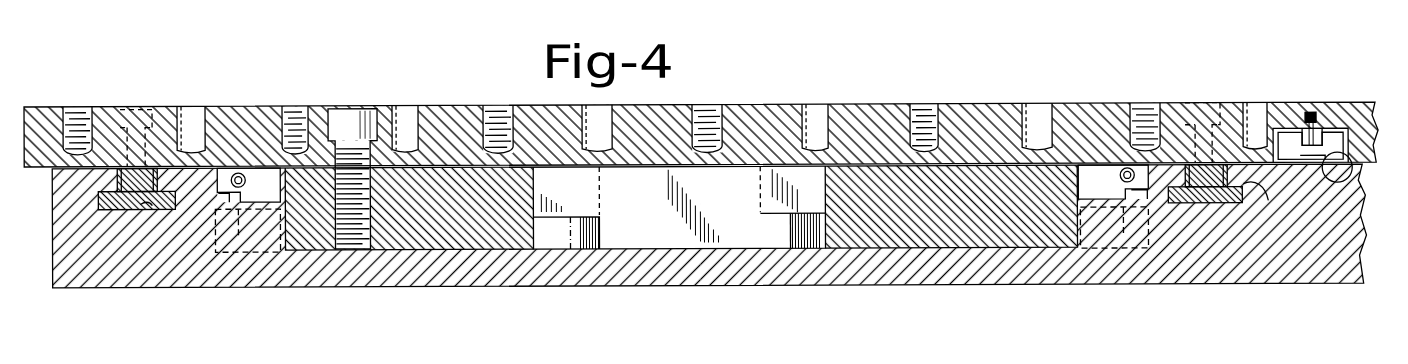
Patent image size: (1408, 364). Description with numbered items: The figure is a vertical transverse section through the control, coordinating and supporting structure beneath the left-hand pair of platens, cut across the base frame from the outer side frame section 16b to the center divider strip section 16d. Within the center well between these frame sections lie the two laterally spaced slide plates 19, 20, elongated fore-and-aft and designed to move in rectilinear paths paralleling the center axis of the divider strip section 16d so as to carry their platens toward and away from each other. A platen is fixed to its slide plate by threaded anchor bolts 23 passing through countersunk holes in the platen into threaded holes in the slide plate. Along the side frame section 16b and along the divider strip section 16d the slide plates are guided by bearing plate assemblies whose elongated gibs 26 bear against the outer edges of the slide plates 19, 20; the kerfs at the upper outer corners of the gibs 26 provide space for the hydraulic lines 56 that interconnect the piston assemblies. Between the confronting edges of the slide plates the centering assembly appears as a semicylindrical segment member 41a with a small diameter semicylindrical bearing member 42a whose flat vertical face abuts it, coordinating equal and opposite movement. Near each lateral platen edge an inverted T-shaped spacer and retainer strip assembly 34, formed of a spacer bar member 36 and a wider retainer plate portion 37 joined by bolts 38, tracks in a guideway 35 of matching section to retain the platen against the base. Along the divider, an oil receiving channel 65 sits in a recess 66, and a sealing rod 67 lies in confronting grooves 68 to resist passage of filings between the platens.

The outer side frame section 16b is at (85, 273).
The center divider strip section 16d is at (1290, 247).
The slide plate 19 is at (955, 241).
The slide plate 20 is at (467, 242).
The threaded anchor bolt 23 is at (357, 112).
The gib 26 is at (268, 178).
The spacer and retainer strip assembly 34 is at (1220, 209).
The guideway 35 is at (147, 207).
The spacer bar member 36 is at (115, 181).
The retainer plate portion 37 is at (105, 205).
The bolt 38 is at (140, 107).
The semicylindrical segment member 41a is at (648, 244).
The semicylindrical bearing member 42a is at (555, 244).
The hydraulic line 56 is at (1115, 172).
The oil receiving and conveying channel 65 is at (1352, 180).
The recess 66 is at (1334, 140).
The sealing rod 67 is at (1310, 117).
The groove 68 is at (1297, 125).